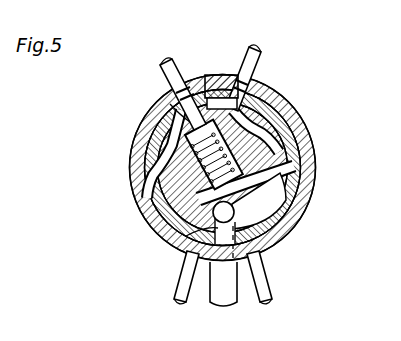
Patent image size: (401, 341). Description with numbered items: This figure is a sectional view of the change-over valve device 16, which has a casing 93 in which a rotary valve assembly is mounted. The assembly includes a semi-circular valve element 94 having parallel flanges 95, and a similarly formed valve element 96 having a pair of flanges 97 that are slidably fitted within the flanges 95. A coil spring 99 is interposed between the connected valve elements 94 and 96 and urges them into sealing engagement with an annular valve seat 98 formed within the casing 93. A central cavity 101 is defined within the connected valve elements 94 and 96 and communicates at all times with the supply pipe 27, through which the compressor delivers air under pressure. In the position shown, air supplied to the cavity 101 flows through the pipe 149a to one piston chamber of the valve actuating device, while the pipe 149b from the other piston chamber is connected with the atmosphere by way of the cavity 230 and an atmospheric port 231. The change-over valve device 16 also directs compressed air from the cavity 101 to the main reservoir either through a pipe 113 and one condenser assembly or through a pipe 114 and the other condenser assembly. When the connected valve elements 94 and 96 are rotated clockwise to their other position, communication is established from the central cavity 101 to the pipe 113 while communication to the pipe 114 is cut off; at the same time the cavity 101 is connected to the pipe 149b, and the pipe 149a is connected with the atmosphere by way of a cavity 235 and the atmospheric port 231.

The change-over valve device 16 is at (288, 97).
The supply pipe 27 is at (232, 293).
The casing 93 is at (300, 172).
The semi-circular valve element 94 is at (288, 196).
The parallel flanges 95 is at (178, 203).
The valve element 96 is at (165, 170).
The flanges 97 is at (185, 148).
The annular valve seat 98 is at (290, 226).
The coil spring 99 is at (255, 163).
The central cavity 101 is at (200, 228).
The pipe 113 is at (183, 284).
The pipe 114 is at (262, 280).
The pipe 149a is at (166, 58).
The pipe 149b is at (270, 36).
The cavity 230 is at (228, 96).
The atmospheric port 231 is at (212, 77).
The cavity 235 is at (172, 120).